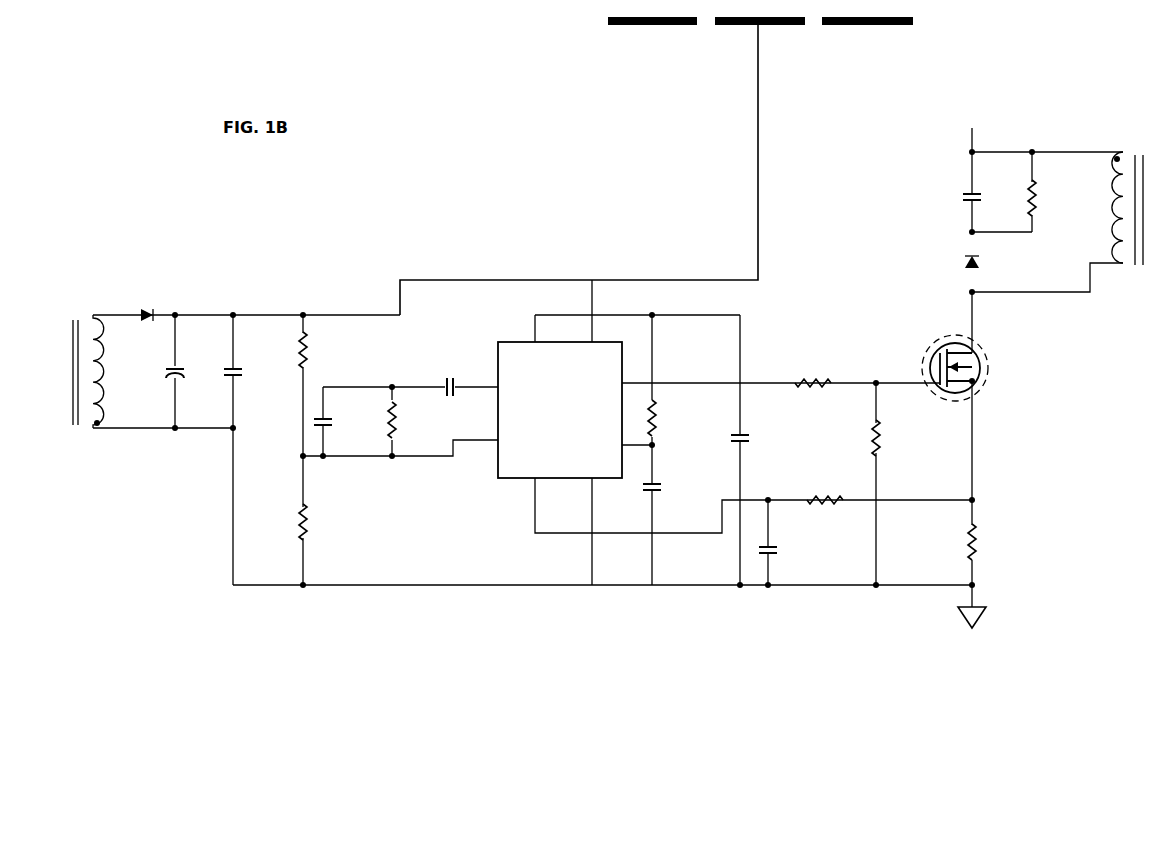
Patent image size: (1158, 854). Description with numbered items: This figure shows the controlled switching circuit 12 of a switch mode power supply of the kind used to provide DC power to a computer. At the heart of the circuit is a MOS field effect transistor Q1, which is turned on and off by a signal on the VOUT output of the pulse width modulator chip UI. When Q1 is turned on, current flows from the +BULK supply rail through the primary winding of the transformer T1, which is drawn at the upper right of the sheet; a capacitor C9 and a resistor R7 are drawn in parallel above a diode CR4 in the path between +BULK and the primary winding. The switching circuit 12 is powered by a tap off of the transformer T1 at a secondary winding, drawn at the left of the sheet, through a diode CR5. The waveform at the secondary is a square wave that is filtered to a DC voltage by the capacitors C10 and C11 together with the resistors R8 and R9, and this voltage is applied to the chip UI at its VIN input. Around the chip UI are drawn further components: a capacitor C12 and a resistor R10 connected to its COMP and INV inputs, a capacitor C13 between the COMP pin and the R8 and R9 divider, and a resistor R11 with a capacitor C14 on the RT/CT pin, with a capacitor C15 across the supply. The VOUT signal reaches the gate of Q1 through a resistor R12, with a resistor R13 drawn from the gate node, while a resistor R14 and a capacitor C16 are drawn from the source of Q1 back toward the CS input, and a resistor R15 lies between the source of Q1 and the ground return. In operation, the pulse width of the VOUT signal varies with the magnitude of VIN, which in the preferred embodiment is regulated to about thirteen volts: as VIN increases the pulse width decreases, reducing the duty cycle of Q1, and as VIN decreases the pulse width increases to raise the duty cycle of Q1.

The controlled switching circuit 12 is at (183, 661).
The transformer T1 is at (91, 360).
The diode CR5 is at (146, 305).
The capacitor C10 is at (187, 371).
The capacitor C11 is at (249, 448).
The resistor R8 is at (349, 385).
The resistor R9 is at (349, 522).
The capacitor C12 is at (345, 423).
The resistor R10 is at (413, 421).
The capacitor C13 is at (451, 357).
The pulse width modulator chip UI is at (568, 410).
The resistor R11 is at (679, 384).
The capacitor C14 is at (671, 515).
The capacitor C15 is at (755, 451).
The resistor R12 is at (813, 362).
The resistor R13 is at (895, 484).
The resistor R14 is at (825, 479).
The capacitor C16 is at (795, 542).
The MOS field effect transistor Q1 is at (973, 368).
The resistor R15 is at (992, 542).
The capacitor C9 is at (953, 192).
The resistor R7 is at (1052, 190).
The diode CR4 is at (989, 275).